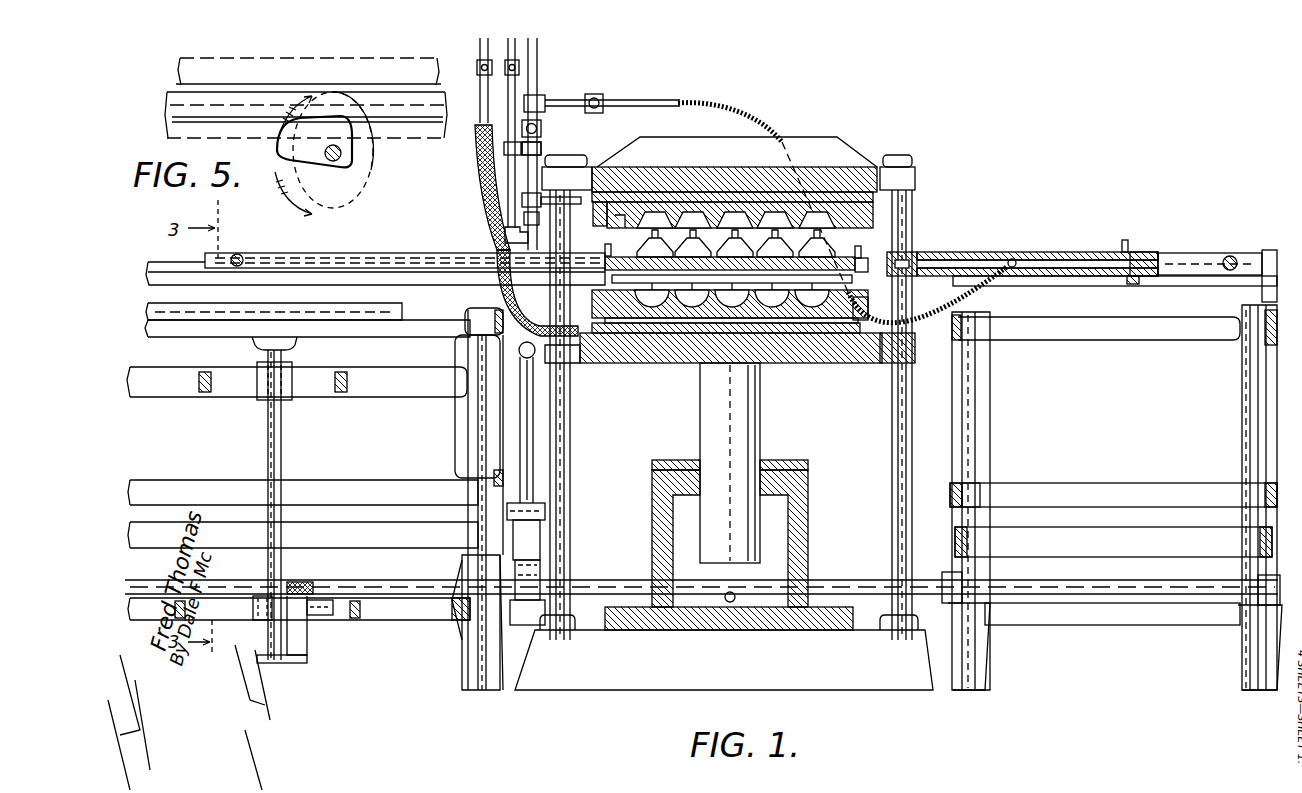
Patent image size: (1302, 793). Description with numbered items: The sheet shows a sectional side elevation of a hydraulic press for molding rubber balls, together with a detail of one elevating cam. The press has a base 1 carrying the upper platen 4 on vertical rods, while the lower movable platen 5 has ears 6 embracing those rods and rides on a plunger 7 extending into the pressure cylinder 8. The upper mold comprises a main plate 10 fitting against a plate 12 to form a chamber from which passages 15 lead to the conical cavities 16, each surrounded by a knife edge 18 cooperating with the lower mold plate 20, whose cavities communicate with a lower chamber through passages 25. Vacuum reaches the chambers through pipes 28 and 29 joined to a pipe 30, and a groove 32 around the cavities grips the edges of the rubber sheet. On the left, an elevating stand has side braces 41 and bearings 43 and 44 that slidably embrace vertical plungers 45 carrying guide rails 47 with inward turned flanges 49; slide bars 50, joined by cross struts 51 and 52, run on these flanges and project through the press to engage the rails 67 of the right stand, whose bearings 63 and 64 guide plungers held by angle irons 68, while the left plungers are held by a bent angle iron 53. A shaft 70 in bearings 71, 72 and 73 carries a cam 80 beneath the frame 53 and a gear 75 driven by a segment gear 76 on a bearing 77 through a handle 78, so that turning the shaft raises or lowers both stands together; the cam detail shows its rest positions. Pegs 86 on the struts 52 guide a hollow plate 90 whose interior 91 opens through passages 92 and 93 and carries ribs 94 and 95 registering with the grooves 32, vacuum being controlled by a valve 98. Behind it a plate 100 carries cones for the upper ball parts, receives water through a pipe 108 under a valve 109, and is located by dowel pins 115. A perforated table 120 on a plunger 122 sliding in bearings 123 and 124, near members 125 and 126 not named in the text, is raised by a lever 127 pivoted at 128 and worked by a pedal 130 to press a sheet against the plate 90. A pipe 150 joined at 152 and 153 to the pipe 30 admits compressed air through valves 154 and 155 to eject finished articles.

In FIG. 1, the base 1 is at (724, 660).
In FIG. 1, the upper platen 4 is at (812, 168).
In FIG. 1, the lower movable platen 5 is at (845, 362).
In FIG. 1, the ears 6 is at (885, 364).
In FIG. 1, the plunger 7 is at (761, 414).
In FIG. 1, the pressure cylinder 8 is at (809, 530).
In FIG. 1, the main plate 10 is at (862, 215).
In FIG. 1, the plate 12 is at (865, 200).
In FIG. 1, the passages 15 is at (655, 243).
In FIG. 1, the cavities 16 is at (696, 243).
In FIG. 1, the knife edge 18 is at (776, 243).
In FIG. 1, the lower mold plate 20 is at (868, 318).
In FIG. 1, the passages 25 is at (730, 304).
In FIG. 1, the pipe 28 is at (598, 222).
In FIG. 1, the pipe 29 is at (530, 326).
In FIG. 1, the vacuum pipe 30 is at (540, 80).
In FIG. 1, the groove 32 is at (622, 226).
In FIG. 1, the side braces 41 is at (425, 315).
In FIG. 1, the bearing 43 is at (470, 310).
In FIG. 1, the bearing 44 is at (494, 476).
In FIG. 1, the vertical plungers 45 is at (462, 405).
In FIG. 1, the guide rails 47 is at (204, 278).
In FIG. 1, the inward turned flange 49 is at (348, 258).
In FIG. 1, the slide bars 50 is at (405, 258).
In FIG. 1, the cross strut 51 is at (244, 256).
In FIG. 1, the cross strut 52 is at (1236, 257).
In FIG. 1, the angle iron 53 is at (415, 545).
In FIG. 1, the bearing 63 is at (988, 342).
In FIG. 1, the bearing 64 is at (985, 485).
In FIG. 1, the rails 67 is at (1228, 287).
In FIG. 1, the angle irons 68 is at (1050, 540).
In FIG. 5, the shaft 70 is at (345, 162).
In FIG. 1, the bearing 71 is at (515, 615).
In FIG. 1, the bearing 72 is at (948, 572).
In FIG. 1, the bearing 73 is at (1270, 605).
In FIG. 1, the gear 75 is at (541, 566).
In FIG. 1, the segment gear 76 is at (541, 535).
In FIG. 1, the bearing 77 is at (545, 505).
In FIG. 1, the handle 78 is at (534, 415).
In FIG. 5, the cam 80 is at (318, 165).
In FIG. 1, the cam 80 is at (458, 600).
In FIG. 1, the vertical pegs 86 is at (920, 255).
In FIG. 1, the hollow rectangular plate 90 is at (1165, 256).
In FIG. 1, the hollow interior space 91 is at (1072, 262).
In FIG. 1, the passages 92 is at (1060, 254).
In FIG. 1, the passages 93 is at (1107, 277).
In FIG. 1, the rib 94 is at (1140, 250).
In FIG. 1, the rib 95 is at (1133, 284).
In FIG. 1, the valve 98 is at (603, 95).
In FIG. 1, the plate 100 is at (845, 258).
In FIG. 1, the pipe 108 is at (480, 200).
In FIG. 1, the valve 109 is at (478, 62).
In FIG. 1, the dowel pins 115 is at (605, 248).
In FIG. 1, the table 120 is at (368, 305).
In FIG. 1, the plunger 122 is at (283, 428).
In FIG. 1, the bearing 123 is at (290, 372).
In FIG. 1, the bearing 124 is at (258, 622).
In FIG. 1, the cross bar 125 is at (375, 375).
In FIG. 1, the lower bar 126 is at (398, 620).
In FIG. 1, the lever 127 is at (308, 657).
In FIG. 1, the pivot 128 is at (322, 616).
In FIG. 1, the pedal 130 is at (300, 582).
In FIG. 1, the pipe 150 is at (507, 110).
In FIG. 1, the connection 152 is at (542, 150).
In FIG. 1, the connection 153 is at (524, 236).
In FIG. 1, the valve 154 is at (542, 128).
In FIG. 1, the valve 155 is at (540, 218).